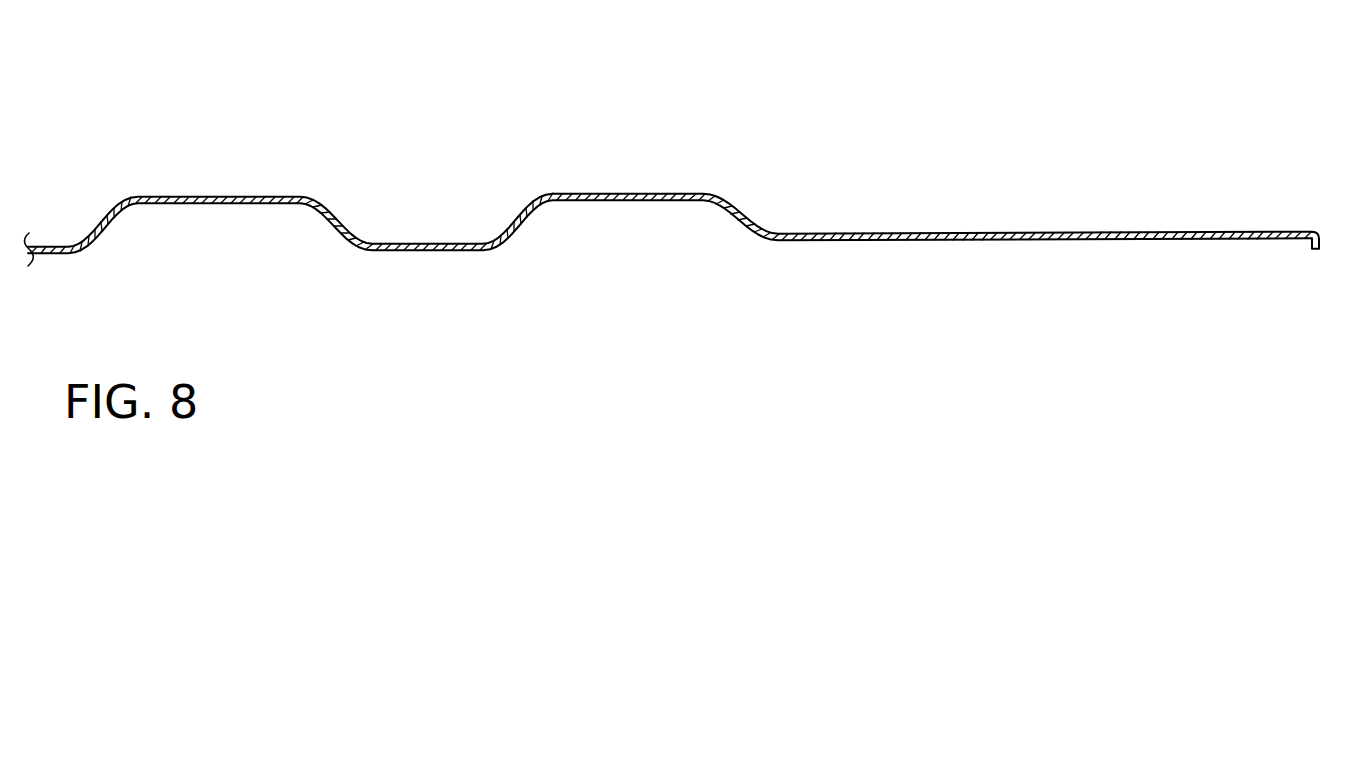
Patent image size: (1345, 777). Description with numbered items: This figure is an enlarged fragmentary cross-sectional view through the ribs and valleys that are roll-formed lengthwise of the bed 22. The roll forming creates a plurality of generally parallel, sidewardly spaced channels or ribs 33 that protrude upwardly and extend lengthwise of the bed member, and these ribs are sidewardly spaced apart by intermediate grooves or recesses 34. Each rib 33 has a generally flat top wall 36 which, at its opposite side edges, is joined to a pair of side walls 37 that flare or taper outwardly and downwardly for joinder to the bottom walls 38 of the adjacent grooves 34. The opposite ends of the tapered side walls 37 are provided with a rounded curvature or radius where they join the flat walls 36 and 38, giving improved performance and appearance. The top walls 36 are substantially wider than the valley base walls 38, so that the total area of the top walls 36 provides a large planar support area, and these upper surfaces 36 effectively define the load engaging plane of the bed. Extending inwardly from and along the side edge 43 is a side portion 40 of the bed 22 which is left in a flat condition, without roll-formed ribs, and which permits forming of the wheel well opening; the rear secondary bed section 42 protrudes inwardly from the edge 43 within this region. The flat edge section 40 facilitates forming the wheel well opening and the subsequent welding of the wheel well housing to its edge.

The bed 22 is at (938, 136).
The channel or rib 33 is at (233, 185).
The groove or recess 34 is at (421, 224).
The top wall 36 is at (172, 197).
The side wall 37 is at (500, 219).
The bottom wall 38 is at (55, 255).
The side portion 40 is at (1000, 241).
The rear secondary bed section 42 is at (1048, 232).
The side edge 43 is at (1316, 250).